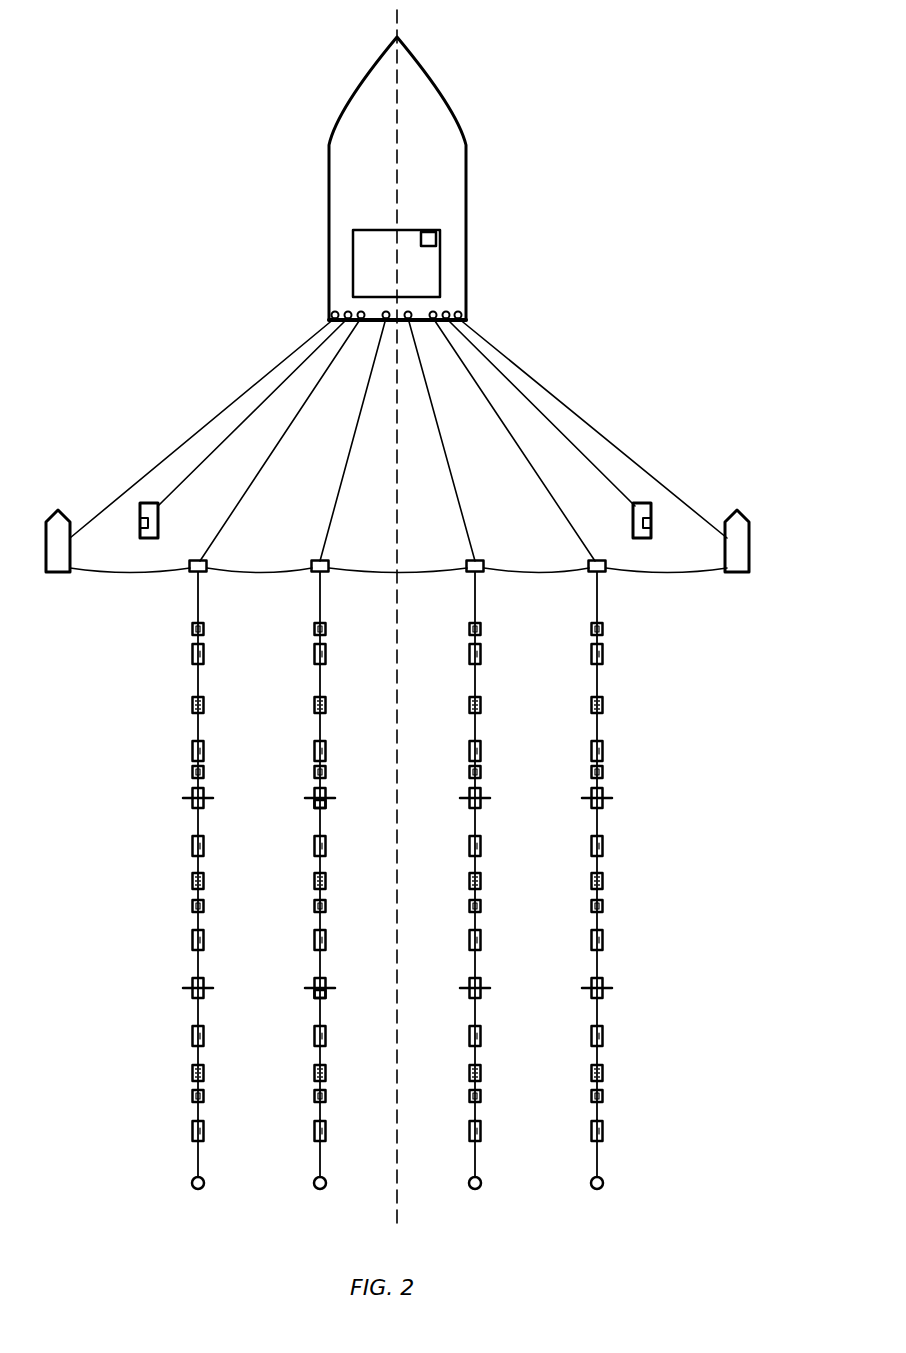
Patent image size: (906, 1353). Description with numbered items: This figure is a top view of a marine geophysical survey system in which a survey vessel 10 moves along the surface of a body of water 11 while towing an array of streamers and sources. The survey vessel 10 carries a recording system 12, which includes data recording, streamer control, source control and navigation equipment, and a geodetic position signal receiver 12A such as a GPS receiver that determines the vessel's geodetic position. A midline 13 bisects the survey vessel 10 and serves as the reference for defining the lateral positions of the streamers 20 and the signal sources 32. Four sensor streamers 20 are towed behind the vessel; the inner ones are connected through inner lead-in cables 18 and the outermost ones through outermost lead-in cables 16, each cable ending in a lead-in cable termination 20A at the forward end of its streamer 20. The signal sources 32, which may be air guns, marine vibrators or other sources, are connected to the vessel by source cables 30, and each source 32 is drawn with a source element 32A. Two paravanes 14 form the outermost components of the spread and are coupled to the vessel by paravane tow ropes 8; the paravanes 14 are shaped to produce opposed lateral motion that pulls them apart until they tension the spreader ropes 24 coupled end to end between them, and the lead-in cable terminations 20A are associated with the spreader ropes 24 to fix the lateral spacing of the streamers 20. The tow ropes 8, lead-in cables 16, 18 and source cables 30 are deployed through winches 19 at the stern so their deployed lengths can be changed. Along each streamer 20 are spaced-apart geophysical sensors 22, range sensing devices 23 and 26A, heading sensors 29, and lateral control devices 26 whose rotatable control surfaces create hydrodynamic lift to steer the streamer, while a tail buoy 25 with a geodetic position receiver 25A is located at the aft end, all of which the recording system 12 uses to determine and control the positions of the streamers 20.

The paravane tow rope 8 is at (237, 410).
The survey vessel 10 is at (380, 162).
The body of water 11 is at (529, 70).
The recording system 12 is at (417, 230).
The geodetic position signal receiver 12A is at (436, 239).
The midline 13 is at (399, 1208).
The paravane 14 is at (748, 545).
The outermost lead-in cable 16 is at (221, 531).
The inner lead-in cable 18 is at (340, 483).
The winch 19 is at (328, 314).
The streamer 20 is at (322, 603).
The lead-in cable termination 20A is at (316, 560).
The geophysical sensor 22 is at (326, 654).
The range sensing device 23 is at (326, 705).
The spreader rope 24 is at (355, 570).
The tail buoy 25 is at (322, 1190).
The geodetic position receiver 25A is at (327, 1183).
The lateral control device 26 is at (333, 795).
The range sensing device 26A is at (326, 805).
The heading sensor 29 is at (326, 629).
The source cable 30 is at (298, 377).
The signal source 32 is at (149, 503).
The source element 32A is at (140, 526).